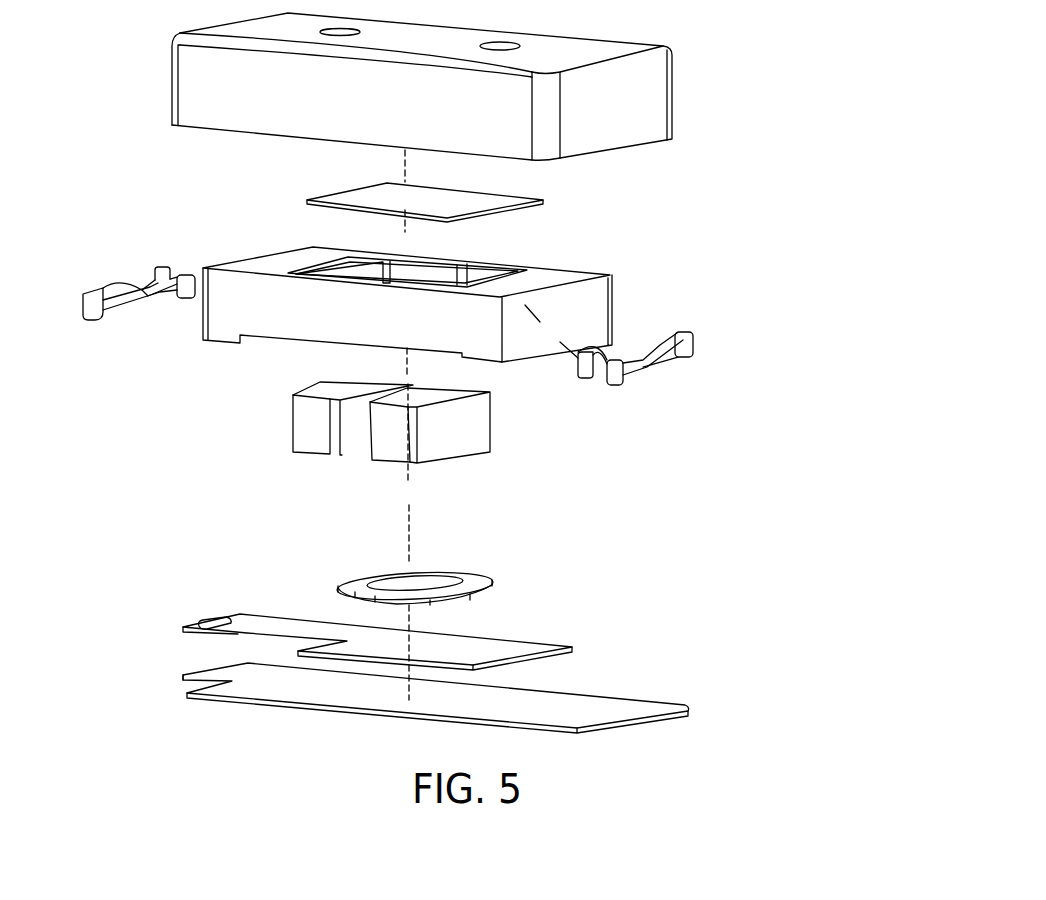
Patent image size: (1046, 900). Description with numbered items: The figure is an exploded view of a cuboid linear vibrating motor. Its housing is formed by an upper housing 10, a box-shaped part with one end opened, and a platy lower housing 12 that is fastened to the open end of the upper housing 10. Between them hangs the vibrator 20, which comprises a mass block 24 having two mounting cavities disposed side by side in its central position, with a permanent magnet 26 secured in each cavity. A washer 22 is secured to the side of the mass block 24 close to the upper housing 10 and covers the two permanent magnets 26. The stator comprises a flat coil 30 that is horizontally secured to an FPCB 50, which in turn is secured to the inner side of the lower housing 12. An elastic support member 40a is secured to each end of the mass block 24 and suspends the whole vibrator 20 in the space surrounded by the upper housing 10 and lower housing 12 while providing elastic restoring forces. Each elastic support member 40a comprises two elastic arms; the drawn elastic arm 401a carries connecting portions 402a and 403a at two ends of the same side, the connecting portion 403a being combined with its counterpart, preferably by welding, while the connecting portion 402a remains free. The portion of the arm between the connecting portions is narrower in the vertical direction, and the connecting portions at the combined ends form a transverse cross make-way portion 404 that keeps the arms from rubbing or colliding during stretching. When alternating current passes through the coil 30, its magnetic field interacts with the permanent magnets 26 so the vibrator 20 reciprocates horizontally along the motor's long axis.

The upper housing 10 is at (655, 103).
The lower housing 12 is at (690, 706).
The vibrator 20 is at (807, 202).
The washer 22 is at (530, 202).
The mass block 24 is at (597, 293).
The permanent magnet 26 is at (480, 432).
The coil 30 is at (493, 579).
The elastic support member 40a is at (678, 421).
The elastic arm 401a is at (648, 365).
The connecting portion 402a is at (623, 384).
The connecting portion 403a is at (690, 340).
The transverse cross make-way portion 404 is at (623, 388).
The FPCB 50 is at (574, 647).